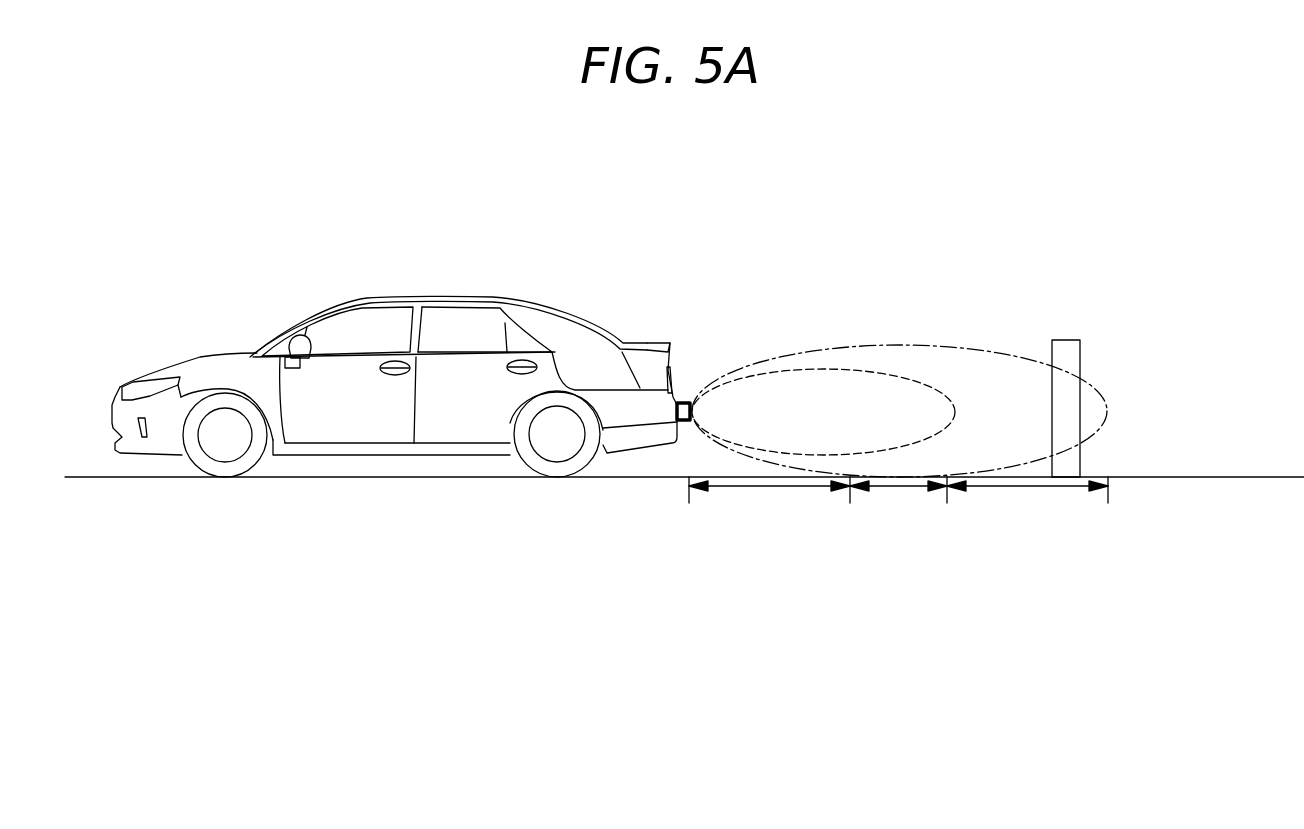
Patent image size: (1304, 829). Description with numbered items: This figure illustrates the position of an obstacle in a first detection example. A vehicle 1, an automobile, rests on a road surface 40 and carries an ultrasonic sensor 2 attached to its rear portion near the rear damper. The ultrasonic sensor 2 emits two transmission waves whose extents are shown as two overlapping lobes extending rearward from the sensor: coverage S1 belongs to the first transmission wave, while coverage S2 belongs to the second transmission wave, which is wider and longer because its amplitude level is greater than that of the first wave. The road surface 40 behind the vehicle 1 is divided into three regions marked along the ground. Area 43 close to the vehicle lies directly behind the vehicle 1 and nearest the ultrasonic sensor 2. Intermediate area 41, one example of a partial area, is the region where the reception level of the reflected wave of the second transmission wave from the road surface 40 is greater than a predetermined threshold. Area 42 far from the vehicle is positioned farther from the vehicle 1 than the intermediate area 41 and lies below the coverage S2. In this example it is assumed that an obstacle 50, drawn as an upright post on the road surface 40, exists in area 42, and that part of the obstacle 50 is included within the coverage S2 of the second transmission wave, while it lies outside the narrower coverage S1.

The vehicle 1 is at (503, 278).
The ultrasonic sensor 2 is at (688, 402).
The road surface 40 is at (1184, 477).
The intermediate area 41 is at (898, 501).
The area far from the vehicle 42 is at (1027, 501).
The area close to the vehicle 43 is at (769, 501).
The obstacle 50 is at (1066, 340).
The coverage S1 is at (824, 369).
The coverage S2 is at (985, 352).